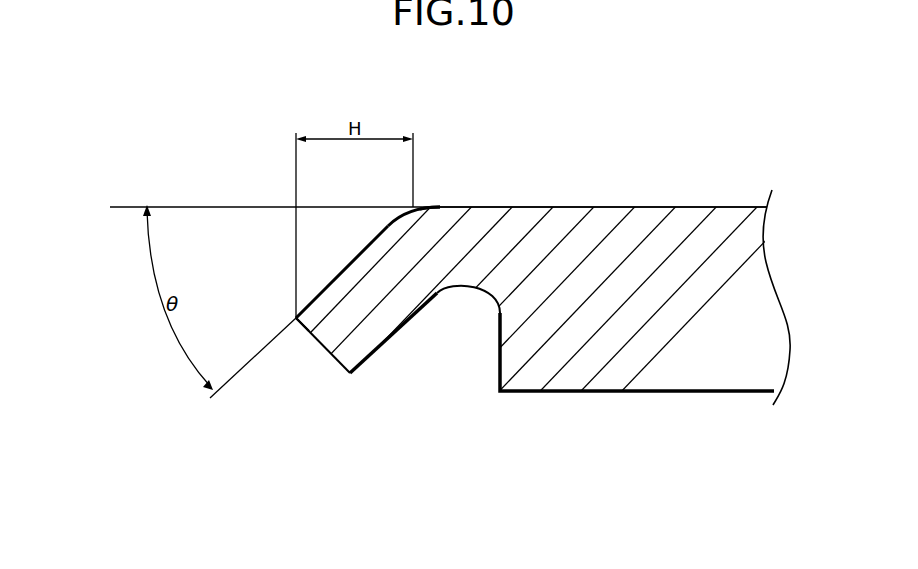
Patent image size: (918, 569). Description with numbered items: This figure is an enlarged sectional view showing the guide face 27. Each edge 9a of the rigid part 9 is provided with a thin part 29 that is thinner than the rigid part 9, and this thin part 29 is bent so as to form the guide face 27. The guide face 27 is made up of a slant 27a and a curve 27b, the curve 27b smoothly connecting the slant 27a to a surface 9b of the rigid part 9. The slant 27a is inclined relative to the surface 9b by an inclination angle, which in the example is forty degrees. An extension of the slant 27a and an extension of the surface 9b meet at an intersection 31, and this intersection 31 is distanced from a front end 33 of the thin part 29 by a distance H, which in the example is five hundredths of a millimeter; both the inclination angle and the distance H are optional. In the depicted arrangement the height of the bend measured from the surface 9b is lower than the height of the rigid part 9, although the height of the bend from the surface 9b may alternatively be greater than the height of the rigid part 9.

The rigid part 9 is at (633, 220).
The edge of the rigid part 9a is at (515, 205).
The surface of the rigid part 9b is at (583, 207).
The guide face 27 is at (376, 232).
The slant 27a is at (344, 273).
The curve 27b is at (423, 204).
The thin part 29 is at (335, 340).
The intersection 31 is at (413, 200).
The front end of the thin part 33 is at (294, 317).